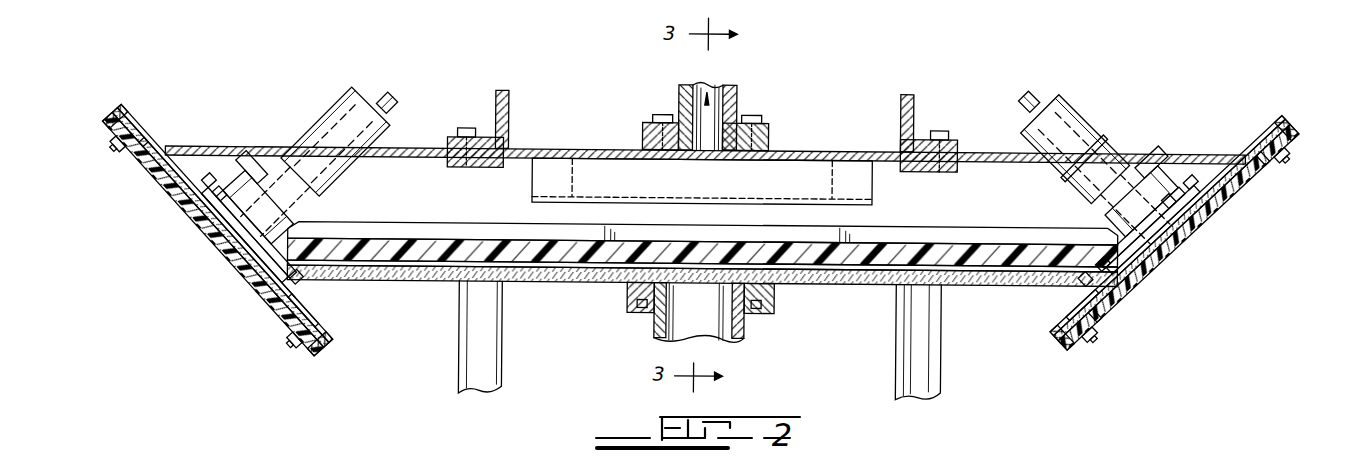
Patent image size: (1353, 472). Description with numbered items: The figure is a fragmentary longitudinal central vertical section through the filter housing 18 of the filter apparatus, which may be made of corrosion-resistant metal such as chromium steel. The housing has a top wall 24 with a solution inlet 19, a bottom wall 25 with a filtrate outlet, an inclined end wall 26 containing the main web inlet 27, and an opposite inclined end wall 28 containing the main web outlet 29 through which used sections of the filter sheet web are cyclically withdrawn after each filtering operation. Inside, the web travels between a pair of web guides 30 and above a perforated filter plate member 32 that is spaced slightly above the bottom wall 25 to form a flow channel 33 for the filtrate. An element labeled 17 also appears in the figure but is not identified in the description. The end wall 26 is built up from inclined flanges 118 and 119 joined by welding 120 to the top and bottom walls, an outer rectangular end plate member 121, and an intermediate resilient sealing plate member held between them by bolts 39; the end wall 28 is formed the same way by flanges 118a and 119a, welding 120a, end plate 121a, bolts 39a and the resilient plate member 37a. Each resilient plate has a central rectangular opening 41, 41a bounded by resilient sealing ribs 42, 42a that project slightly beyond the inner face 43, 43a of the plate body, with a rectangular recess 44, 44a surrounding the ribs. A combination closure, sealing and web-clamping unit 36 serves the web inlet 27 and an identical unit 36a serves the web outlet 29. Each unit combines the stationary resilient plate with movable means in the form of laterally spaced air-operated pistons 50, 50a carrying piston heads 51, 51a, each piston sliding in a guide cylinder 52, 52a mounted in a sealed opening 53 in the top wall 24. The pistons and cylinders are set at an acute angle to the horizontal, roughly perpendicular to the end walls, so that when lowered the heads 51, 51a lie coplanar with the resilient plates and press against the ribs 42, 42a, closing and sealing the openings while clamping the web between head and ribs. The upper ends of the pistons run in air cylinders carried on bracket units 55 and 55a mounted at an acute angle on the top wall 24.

The support leg 17 is at (482, 380).
The filter housing 18 is at (787, 148).
The solution inlet 19 is at (712, 92).
The top wall 24 is at (818, 150).
The bottom wall 25 is at (832, 285).
The inclined end wall 26 is at (1262, 159).
The main web inlet 27 is at (1150, 249).
The inclined end wall 28 is at (725, 340).
The main web outlet 29 is at (274, 274).
The web guides 30 is at (428, 230).
The perforated filter plate member 32 is at (560, 265).
The flow channel 33 is at (600, 268).
The combination closure, sealing and web-clamping unit 36 is at (1184, 187).
The combination closure, sealing and web-clamping unit 36a is at (255, 181).
The resilient sealing plate member 37a is at (172, 165).
The fastening bolts 39 is at (1294, 147).
The fastening bolts 39a is at (114, 143).
The central rectangular opening 41 is at (1153, 243).
The central rectangular opening 41a is at (256, 250).
The marginal edge sealing ribs 42 is at (1186, 203).
The marginal edge sealing ribs 42a is at (230, 218).
The inner face of sealing plate body 43 is at (1232, 177).
The inner face of sealing plate body 43a is at (160, 135).
The rectangular recess 44 is at (1208, 183).
The rectangular recess 44a is at (212, 198).
The air-operated pistons 50 is at (1032, 97).
The air-operated pistons 50a is at (392, 103).
The sealing and web-clamping piston head 51 is at (1160, 188).
The sealing and web-clamping piston head 51a is at (238, 191).
The guide cylinder 52 is at (1075, 127).
The guide cylinder 52a is at (372, 91).
The opening in top wall 53 is at (1042, 161).
The supporting bracket unit 55 is at (914, 98).
The supporting bracket unit 55a is at (512, 110).
The inclined flange 118 is at (1062, 328).
The inclined flange 118a is at (330, 311).
The inclined flange 119 is at (1285, 115).
The inclined flange 119a is at (121, 106).
The welding 120 is at (1266, 146).
The welding 120a is at (178, 133).
The outer end plate member 121 is at (1074, 343).
The outer end plate member 121a is at (324, 350).